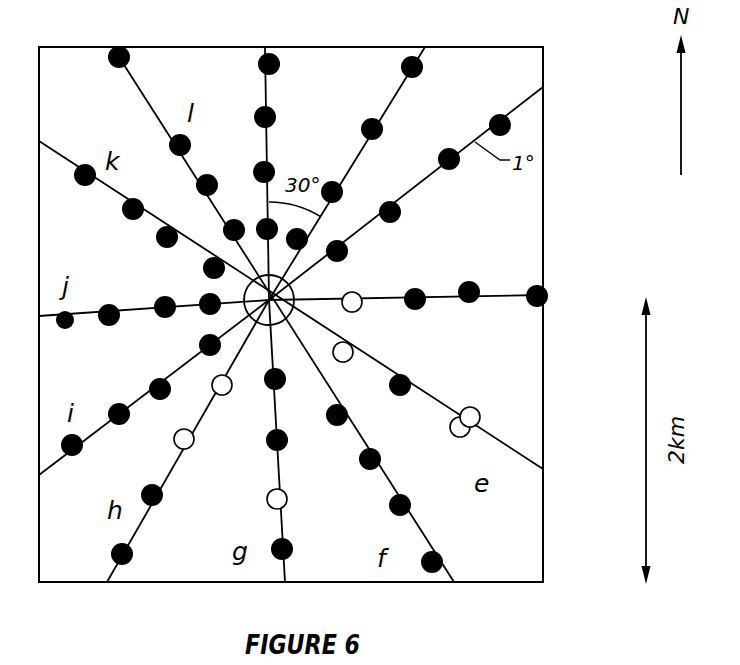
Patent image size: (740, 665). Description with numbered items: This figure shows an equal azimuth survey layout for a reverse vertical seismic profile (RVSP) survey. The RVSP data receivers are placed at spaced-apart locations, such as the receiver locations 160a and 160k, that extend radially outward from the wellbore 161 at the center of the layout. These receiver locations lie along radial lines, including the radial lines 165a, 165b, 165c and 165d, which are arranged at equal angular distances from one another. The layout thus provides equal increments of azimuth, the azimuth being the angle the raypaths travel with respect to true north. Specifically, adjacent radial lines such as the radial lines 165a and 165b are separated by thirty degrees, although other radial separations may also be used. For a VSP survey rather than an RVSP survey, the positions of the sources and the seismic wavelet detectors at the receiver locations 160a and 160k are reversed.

The radial line 165a is at (210, 158).
The radial line 165b is at (347, 158).
The radial line 165c is at (443, 185).
The radial line 165d is at (441, 321).
The receiver location 160k is at (453, 147).
The receiver location 160a is at (376, 262).
The wellbore 161 is at (194, 285).